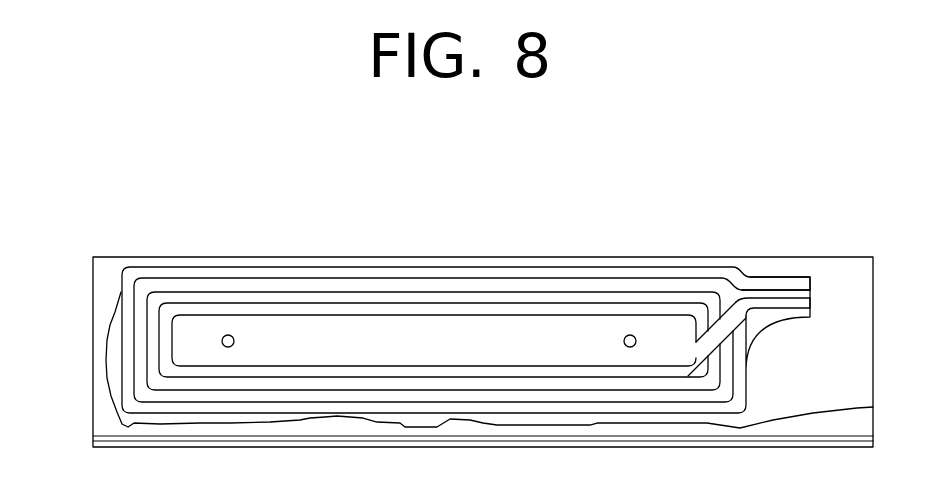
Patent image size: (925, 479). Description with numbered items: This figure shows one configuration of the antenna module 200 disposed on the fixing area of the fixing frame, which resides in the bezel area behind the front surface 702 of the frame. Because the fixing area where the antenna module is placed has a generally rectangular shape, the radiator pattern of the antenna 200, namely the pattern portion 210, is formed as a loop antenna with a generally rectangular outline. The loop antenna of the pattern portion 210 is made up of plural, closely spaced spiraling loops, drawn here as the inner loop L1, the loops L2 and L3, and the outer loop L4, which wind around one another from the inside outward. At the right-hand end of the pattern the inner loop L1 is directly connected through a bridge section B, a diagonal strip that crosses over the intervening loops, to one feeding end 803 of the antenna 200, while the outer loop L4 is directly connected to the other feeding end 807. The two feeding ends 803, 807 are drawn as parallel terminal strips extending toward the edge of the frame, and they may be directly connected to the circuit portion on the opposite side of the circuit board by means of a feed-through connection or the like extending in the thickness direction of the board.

The front surface 702 is at (102, 290).
The pattern portion 210 is at (463, 313).
The inner loop L1 is at (212, 310).
The loop L2 is at (270, 297).
The loop L3 is at (325, 288).
The outer loop L4 is at (383, 272).
The antenna module 200 is at (662, 328).
The bridge section B is at (719, 330).
The feeding end 807 is at (768, 283).
The feeding end 803 is at (803, 302).